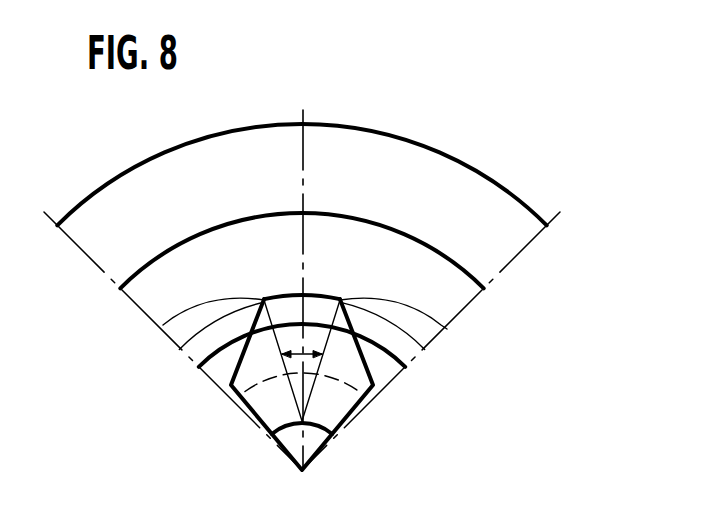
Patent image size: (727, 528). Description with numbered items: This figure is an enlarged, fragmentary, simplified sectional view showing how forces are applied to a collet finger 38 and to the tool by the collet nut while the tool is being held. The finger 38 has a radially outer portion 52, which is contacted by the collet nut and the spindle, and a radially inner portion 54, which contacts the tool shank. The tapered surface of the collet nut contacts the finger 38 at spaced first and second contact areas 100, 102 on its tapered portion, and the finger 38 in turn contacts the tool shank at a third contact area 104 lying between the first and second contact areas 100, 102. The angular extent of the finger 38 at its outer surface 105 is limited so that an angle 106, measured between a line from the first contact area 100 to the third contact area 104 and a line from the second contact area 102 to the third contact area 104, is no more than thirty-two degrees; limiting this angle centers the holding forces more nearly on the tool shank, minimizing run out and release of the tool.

The finger 38 is at (335, 394).
The radially outer portion 52 is at (313, 294).
The radially inner portion 54 is at (284, 440).
The first contact area 100 is at (163, 325).
The second contact area 102 is at (447, 329).
The third contact area 104 is at (299, 294).
The outer surface 105 is at (291, 294).
The angle 106 is at (300, 350).